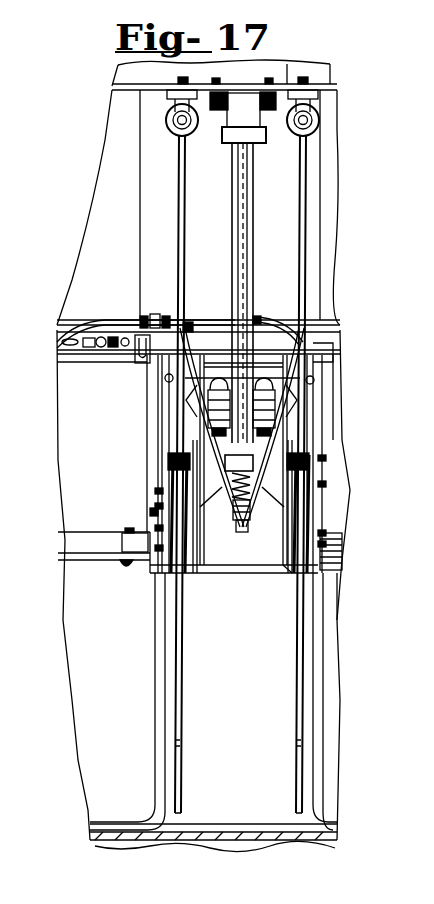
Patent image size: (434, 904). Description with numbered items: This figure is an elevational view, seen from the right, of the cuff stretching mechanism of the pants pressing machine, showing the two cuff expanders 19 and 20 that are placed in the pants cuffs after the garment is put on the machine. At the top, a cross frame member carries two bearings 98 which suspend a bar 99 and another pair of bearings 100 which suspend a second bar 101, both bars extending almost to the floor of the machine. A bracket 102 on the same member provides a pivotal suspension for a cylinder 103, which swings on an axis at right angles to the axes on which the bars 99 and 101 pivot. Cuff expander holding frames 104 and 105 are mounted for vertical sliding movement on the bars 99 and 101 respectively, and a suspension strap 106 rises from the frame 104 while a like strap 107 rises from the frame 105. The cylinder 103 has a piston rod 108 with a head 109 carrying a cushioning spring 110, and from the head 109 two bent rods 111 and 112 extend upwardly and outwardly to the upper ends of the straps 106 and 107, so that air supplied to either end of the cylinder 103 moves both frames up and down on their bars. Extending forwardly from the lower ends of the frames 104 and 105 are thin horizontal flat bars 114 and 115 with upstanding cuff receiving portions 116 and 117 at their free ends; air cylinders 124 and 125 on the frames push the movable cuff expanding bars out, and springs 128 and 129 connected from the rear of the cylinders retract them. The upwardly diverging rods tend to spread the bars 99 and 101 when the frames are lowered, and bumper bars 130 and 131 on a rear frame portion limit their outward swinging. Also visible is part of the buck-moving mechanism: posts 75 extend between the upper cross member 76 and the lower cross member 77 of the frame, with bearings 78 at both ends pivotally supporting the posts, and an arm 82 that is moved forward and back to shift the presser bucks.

The cuff expander 19 is at (307, 483).
The cuff expander 20 is at (163, 493).
The post 75 is at (148, 420).
The upper cross member 76 is at (110, 328).
The lower cross member 77 is at (102, 565).
The bearing 78 is at (135, 330).
The arm 82 is at (155, 397).
The bearing 98 is at (294, 118).
The bar 99 is at (303, 198).
The bearing 100 is at (173, 110).
The bar 101 is at (183, 189).
The bracket 102 is at (218, 117).
The cylinder 103 is at (245, 211).
The cuff expander holding frame 104 is at (292, 572).
The cuff expander holding frame 105 is at (187, 570).
The suspension strap 106 is at (300, 320).
The suspension strap 107 is at (187, 327).
The piston rod 108 is at (253, 513).
The head 109 is at (240, 527).
The cushioning spring 110 is at (233, 522).
The bent rod 111 is at (257, 490).
The bent rod 112 is at (225, 490).
The horizontal flat bar 114 is at (338, 627).
The horizontal flat bar 115 is at (158, 573).
The upstanding cuff receiving portion 116 is at (317, 517).
The upstanding cuff receiving portion 117 is at (158, 505).
The air cylinder 124 is at (327, 572).
The air cylinder 125 is at (150, 567).
The spring 128 is at (318, 530).
The spring 129 is at (155, 530).
The bumper bar 130 is at (313, 380).
The bumper bar 131 is at (166, 378).